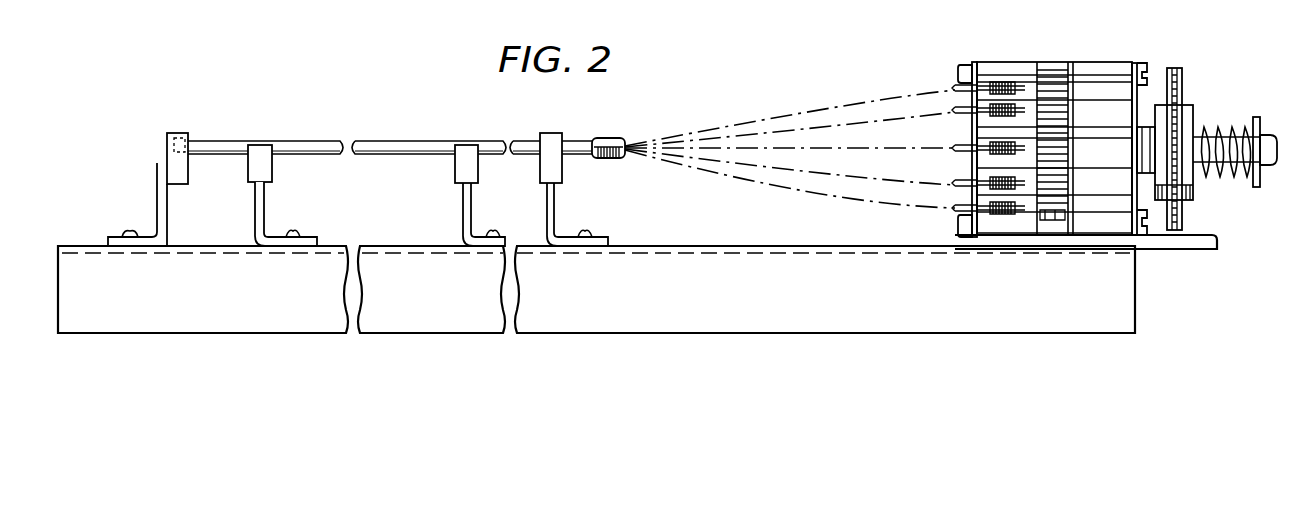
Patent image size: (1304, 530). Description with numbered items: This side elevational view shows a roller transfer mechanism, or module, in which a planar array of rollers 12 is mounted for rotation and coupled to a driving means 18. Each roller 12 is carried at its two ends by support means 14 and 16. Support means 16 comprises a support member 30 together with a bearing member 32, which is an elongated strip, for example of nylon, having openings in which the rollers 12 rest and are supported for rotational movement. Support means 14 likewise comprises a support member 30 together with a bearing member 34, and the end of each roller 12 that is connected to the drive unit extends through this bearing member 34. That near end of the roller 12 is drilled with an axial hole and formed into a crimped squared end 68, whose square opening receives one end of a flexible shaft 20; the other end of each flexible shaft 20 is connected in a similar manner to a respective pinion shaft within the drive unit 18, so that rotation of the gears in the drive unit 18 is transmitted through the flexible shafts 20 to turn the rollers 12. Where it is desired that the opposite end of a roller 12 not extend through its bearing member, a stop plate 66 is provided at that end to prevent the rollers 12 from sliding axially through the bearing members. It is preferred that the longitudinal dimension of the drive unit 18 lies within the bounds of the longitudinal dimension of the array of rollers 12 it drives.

The rollers 12 is at (384, 140).
The support means 14 is at (570, 192).
The support means 16 is at (450, 192).
The driving means 18 is at (1063, 48).
The flexible shafts 20 is at (799, 114).
The support member 30 is at (546, 213).
The bearing member 32 is at (455, 158).
The bearing member 34 is at (189, 175).
The stop plate 66 is at (169, 132).
The crimped squared end 68 is at (608, 138).